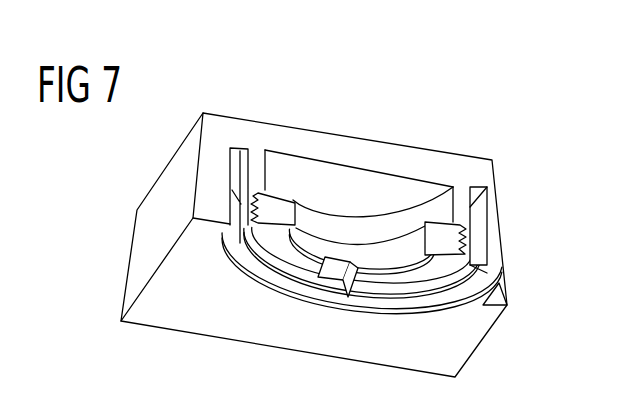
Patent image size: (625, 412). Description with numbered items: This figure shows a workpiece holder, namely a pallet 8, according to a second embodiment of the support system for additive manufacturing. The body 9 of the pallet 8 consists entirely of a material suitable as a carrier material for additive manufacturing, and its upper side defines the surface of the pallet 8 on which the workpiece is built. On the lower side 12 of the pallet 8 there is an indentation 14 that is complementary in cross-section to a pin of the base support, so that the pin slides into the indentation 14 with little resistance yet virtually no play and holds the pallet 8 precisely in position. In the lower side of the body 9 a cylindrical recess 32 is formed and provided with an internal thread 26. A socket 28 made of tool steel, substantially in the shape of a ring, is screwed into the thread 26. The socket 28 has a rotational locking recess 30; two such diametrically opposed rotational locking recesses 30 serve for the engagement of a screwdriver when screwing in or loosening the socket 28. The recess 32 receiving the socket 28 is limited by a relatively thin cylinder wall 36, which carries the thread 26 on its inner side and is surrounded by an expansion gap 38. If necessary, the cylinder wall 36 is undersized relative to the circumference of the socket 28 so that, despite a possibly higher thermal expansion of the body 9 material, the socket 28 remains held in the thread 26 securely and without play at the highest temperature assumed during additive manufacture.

The pallet 8 is at (97, 279).
The body 9 is at (135, 232).
The lower side 12 is at (198, 315).
The indentation 14 is at (320, 177).
The internal thread 26 is at (258, 192).
The socket 28 is at (367, 237).
The rotational locking recess 30 is at (330, 283).
The cylindrical recess 32 is at (437, 207).
The cylinder wall 36 is at (460, 212).
The expansion gap 38 is at (477, 257).